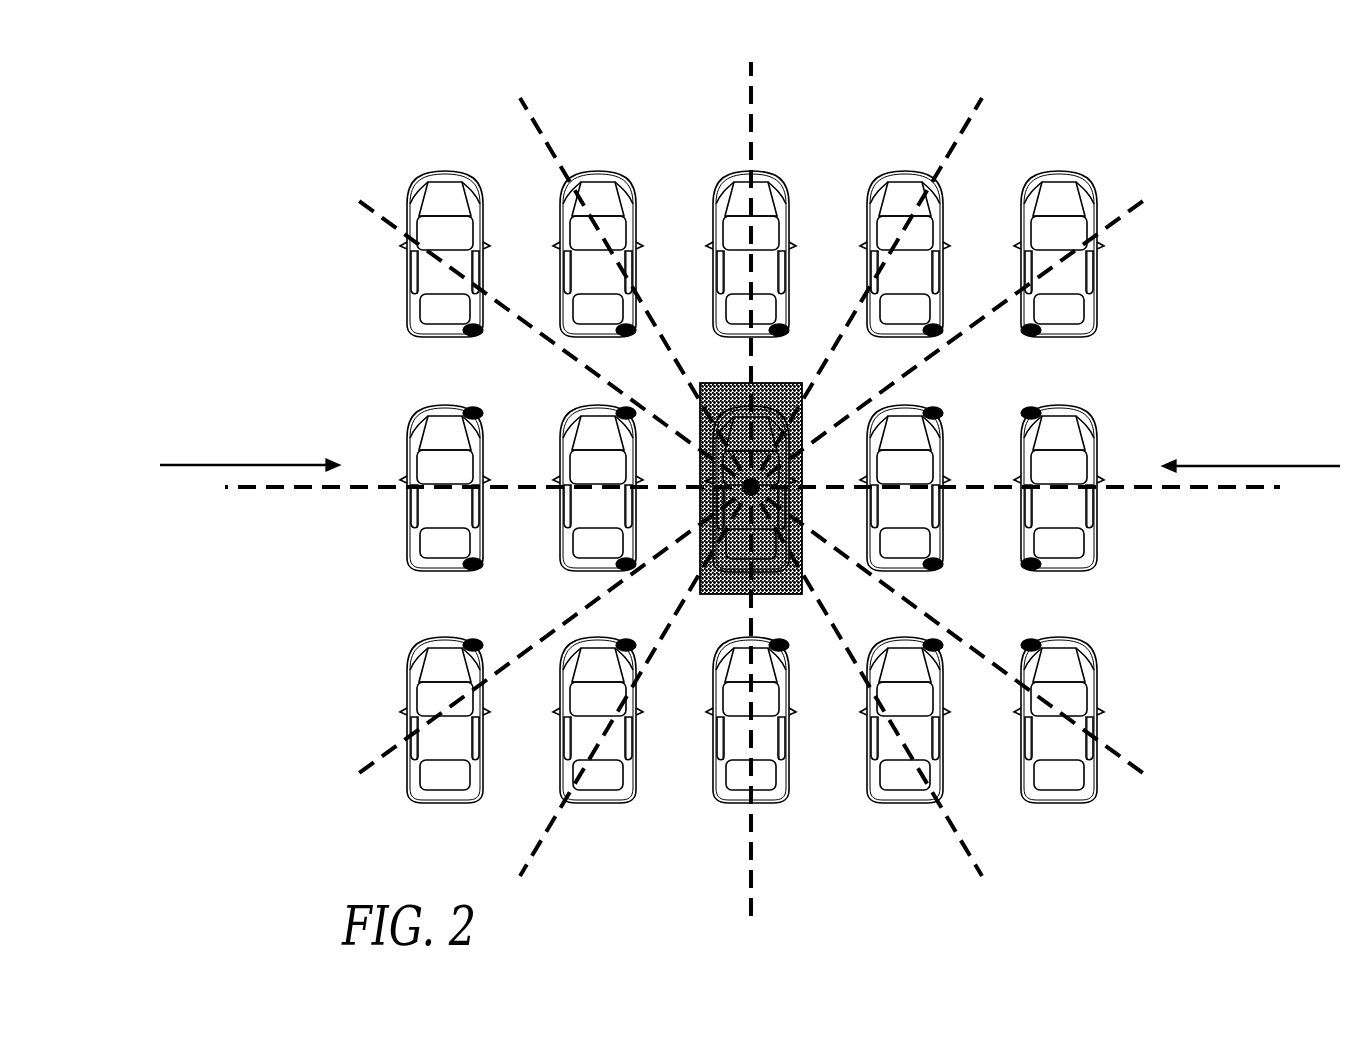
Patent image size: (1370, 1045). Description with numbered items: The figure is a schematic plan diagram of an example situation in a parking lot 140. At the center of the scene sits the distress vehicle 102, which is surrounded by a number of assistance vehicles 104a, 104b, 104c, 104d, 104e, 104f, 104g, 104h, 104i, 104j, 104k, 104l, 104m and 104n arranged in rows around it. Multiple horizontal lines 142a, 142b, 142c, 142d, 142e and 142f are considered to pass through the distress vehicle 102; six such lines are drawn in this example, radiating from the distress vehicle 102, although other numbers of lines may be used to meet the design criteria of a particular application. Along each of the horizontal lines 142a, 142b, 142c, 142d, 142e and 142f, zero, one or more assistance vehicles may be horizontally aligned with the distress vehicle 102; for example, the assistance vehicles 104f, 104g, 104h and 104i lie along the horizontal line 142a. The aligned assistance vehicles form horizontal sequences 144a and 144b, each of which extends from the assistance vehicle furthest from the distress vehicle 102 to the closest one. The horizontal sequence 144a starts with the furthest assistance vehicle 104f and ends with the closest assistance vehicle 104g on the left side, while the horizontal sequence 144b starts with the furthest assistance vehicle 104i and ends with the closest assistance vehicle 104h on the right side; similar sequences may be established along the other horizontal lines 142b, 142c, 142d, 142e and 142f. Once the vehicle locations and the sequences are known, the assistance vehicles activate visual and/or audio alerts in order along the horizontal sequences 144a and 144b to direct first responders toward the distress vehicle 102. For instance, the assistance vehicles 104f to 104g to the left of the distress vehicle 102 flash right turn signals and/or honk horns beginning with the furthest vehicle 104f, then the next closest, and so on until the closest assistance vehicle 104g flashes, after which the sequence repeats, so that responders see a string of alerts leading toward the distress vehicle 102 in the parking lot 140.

The parking lot 140 is at (372, 140).
The distress vehicle 102 is at (778, 383).
The assistance vehicle 104a is at (407, 247).
The assistance vehicle 104b is at (598, 172).
The assistance vehicle 104c is at (733, 172).
The assistance vehicle 104d is at (905, 172).
The assistance vehicle 104e is at (1097, 250).
The assistance vehicle 104f is at (407, 457).
The assistance vehicle 104g is at (562, 463).
The assistance vehicle 104h is at (980, 450).
The assistance vehicle 104i is at (1097, 457).
The assistance vehicle 104j is at (407, 716).
The assistance vehicle 104k is at (597, 803).
The assistance vehicle 104l is at (737, 803).
The assistance vehicle 104m is at (905, 803).
The assistance vehicle 104n is at (1097, 718).
The horizontal line 142a is at (222, 501).
The horizontal line 142b is at (350, 198).
The horizontal line 142c is at (537, 92).
The horizontal line 142d is at (779, 54).
The horizontal line 142e is at (1007, 92).
The horizontal line 142f is at (1205, 196).
The horizontal sequence 144a is at (250, 465).
The horizontal sequence 144b is at (1250, 466).